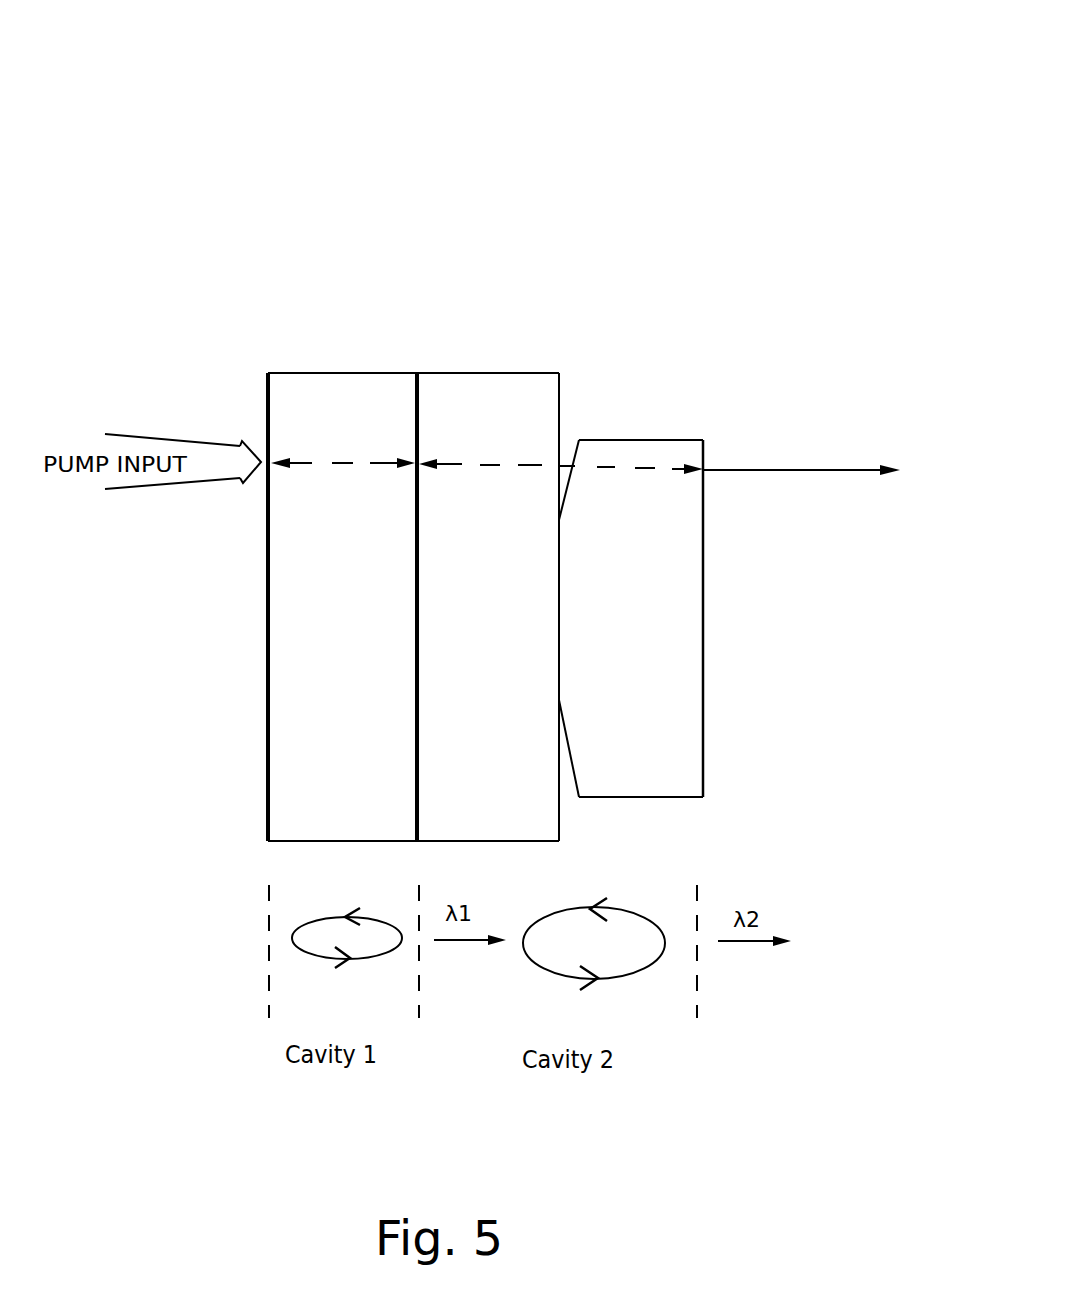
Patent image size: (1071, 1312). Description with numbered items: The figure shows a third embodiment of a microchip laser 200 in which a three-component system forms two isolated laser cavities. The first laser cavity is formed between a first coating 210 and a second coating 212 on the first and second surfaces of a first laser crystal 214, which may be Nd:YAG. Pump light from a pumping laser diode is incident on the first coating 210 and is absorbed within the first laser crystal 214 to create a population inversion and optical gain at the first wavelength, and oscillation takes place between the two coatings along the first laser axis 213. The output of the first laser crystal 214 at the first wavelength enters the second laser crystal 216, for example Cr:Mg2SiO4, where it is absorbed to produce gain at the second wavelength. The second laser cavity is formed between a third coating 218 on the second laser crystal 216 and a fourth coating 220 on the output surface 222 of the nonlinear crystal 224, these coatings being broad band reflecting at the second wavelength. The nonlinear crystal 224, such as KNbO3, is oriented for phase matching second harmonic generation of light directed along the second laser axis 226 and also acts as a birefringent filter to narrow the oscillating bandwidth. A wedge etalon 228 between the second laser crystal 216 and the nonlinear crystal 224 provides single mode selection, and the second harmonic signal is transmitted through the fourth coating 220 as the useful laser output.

The laser 200 is at (758, 147).
The first coating 210 is at (266, 404).
The second coating 212 is at (414, 413).
The first laser axis 213 is at (343, 464).
The first laser crystal 214 is at (303, 400).
The second laser crystal 216 is at (514, 390).
The third coating 218 is at (419, 413).
The fourth coating 220 is at (722, 447).
The output surface 222 is at (703, 725).
The nonlinear crystal 224 is at (661, 450).
The second laser axis 226 is at (610, 475).
The wedge etalon 228 is at (561, 512).